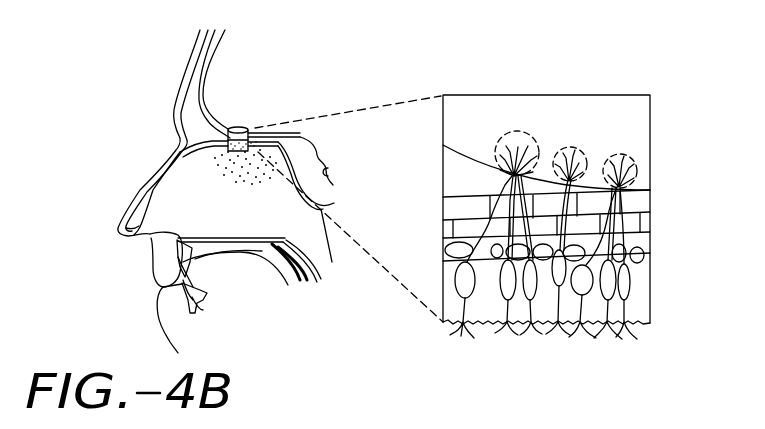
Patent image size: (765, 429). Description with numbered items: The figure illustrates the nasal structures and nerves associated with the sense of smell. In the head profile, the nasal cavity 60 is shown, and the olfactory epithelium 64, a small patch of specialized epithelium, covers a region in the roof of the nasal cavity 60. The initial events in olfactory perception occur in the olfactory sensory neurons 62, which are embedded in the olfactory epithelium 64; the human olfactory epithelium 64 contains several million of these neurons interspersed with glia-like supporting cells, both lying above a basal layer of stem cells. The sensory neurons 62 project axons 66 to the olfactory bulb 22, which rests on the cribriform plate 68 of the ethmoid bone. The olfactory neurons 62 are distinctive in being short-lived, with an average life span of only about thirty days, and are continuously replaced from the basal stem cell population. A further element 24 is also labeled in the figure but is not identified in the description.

The olfactory bulb 22 is at (238, 128).
The delivery tube 24 is at (302, 132).
The nasal cavity 60 is at (193, 167).
The olfactory sensory neurons 62 is at (468, 256).
The olfactory epithelium 64 is at (231, 170).
The axons 66 is at (507, 182).
The cribriform plate 68 is at (458, 207).